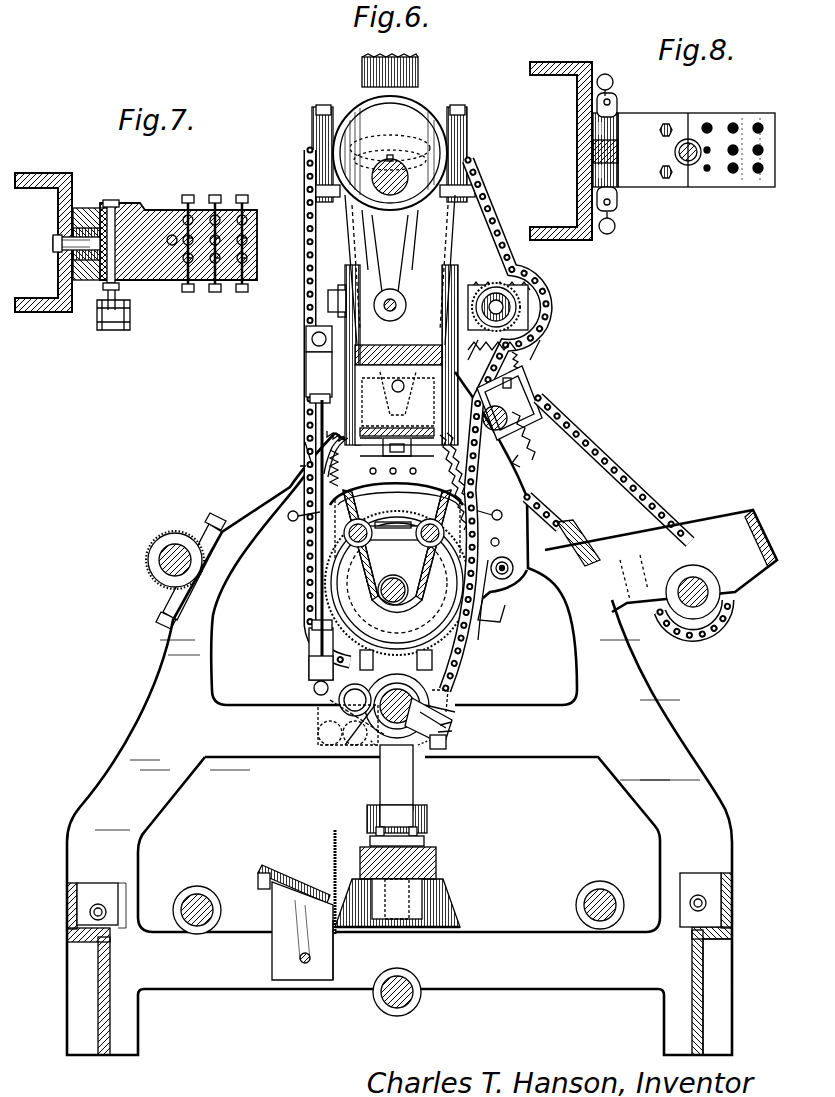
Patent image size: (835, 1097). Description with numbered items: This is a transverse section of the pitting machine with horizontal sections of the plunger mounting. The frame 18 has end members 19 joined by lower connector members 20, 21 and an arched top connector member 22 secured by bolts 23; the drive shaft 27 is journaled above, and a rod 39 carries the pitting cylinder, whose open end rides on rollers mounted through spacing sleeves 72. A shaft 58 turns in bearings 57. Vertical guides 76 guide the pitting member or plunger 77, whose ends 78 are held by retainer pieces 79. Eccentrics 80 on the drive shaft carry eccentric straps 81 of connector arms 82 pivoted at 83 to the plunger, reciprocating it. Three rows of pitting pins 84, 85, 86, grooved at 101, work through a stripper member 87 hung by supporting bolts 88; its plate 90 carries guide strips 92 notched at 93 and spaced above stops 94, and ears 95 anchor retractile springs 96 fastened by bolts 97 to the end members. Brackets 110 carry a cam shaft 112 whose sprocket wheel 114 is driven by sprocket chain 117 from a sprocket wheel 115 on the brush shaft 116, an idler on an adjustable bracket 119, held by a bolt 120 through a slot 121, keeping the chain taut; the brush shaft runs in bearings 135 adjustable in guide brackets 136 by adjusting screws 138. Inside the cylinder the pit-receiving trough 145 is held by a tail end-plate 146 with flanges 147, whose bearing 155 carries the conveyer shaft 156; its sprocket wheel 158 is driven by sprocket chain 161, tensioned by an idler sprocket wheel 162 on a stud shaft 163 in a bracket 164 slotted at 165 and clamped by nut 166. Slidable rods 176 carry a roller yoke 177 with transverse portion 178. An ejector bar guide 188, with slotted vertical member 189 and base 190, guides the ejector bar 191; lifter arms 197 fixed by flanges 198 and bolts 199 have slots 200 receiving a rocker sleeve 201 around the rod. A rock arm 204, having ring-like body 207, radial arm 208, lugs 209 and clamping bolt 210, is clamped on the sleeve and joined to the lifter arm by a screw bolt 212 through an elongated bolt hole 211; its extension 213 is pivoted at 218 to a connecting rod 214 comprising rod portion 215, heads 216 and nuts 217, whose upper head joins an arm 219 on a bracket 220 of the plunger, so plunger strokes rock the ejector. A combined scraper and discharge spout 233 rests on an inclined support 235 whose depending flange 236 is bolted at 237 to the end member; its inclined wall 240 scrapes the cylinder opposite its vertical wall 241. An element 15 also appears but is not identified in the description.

In FIG. 6, the lever 15 is at (308, 660).
In FIG. 6, the frame 18 is at (300, 480).
In FIG. 6, the end members 19 is at (170, 696).
In FIG. 7, the end members 19 is at (55, 313).
In FIG. 8, the end members 19 is at (580, 210).
In FIG. 6, the connector member 20 is at (692, 965).
In FIG. 6, the connector member 21 is at (97, 965).
In FIG. 6, the arched top connector member 22 is at (410, 76).
In FIG. 6, the bolts 23 is at (324, 106).
In FIG. 6, the drive shaft 27 is at (396, 160).
In FIG. 6, the shaft or cylindrical supporting rod 39 is at (388, 722).
In FIG. 6, the bearings 57 is at (179, 533).
In FIG. 6, the shaft 58 is at (160, 558).
In FIG. 6, the spacing sleeves 72 is at (222, 907).
In FIG. 6, the vertical guides 76 is at (402, 410).
In FIG. 7, the vertical guides 76 is at (58, 252).
In FIG. 8, the vertical guides 76 is at (592, 152).
In FIG. 6, the pitting member or plunger 77 is at (430, 357).
In FIG. 7, the pitting member or plunger 77 is at (160, 281).
In FIG. 7, the ends of pitting member 78 is at (128, 215).
In FIG. 7, the retainer pieces 79 is at (85, 212).
In FIG. 6, the eccentrics 80 is at (432, 135).
In FIG. 6, the eccentric straps 81 is at (452, 155).
In FIG. 6, the connector arms 82 is at (418, 232).
In FIG. 6, the pivotal connection 83 is at (410, 312).
In FIG. 7, the pitting pins 84 is at (246, 222).
In FIG. 8, the pitting pins 84 is at (707, 122).
In FIG. 7, the pitting pins 85 is at (248, 240).
In FIG. 8, the pitting pins 85 is at (737, 140).
In FIG. 7, the pitting pins 86 is at (248, 258).
In FIG. 8, the pitting pins 86 is at (708, 175).
In FIG. 8, the stripper member 87 is at (735, 175).
In FIG. 7, the supporting bolts 88 is at (172, 235).
In FIG. 8, the supporting bolts 88 is at (682, 165).
In FIG. 8, the flat plate 90 is at (765, 178).
In FIG. 6, the guide strips 92 is at (412, 432).
In FIG. 8, the guide strips 92 is at (650, 122).
In FIG. 8, the notches 93 is at (620, 158).
In FIG. 6, the stops 94 is at (396, 494).
In FIG. 6, the ears 95 is at (336, 448).
In FIG. 8, the ears 95 is at (612, 102).
In FIG. 6, the retractile springs 96 is at (397, 468).
In FIG. 8, the retractile springs 96 is at (605, 74).
In FIG. 6, the bolts 97 is at (288, 517).
In FIG. 8, the grooves 101 is at (733, 108).
In FIG. 6, the brackets 110 is at (613, 542).
In FIG. 6, the shaft 112 is at (712, 597).
In FIG. 6, the sprocket wheel 114 is at (702, 628).
In FIG. 6, the sprocket wheel 115 is at (540, 440).
In FIG. 6, the brush shaft 116 is at (528, 395).
In FIG. 6, the sprocket chain 117 is at (620, 472).
In FIG. 6, the adjustable bracket 119 is at (502, 585).
In FIG. 6, the bolt 120 is at (512, 566).
In FIG. 6, the slot 121 is at (484, 606).
In FIG. 6, the bearings 135 is at (545, 412).
In FIG. 6, the guide brackets 136 is at (524, 428).
In FIG. 6, the adjusting screws 138 is at (522, 368).
In FIG. 6, the pit-receiving box or trough 145 is at (397, 583).
In FIG. 6, the tail end-plate 146 is at (340, 580).
In FIG. 6, the inwardly-extending flanges 147 is at (345, 560).
In FIG. 6, the bearing 155 is at (405, 582).
In FIG. 6, the conveyer shaft 156 is at (348, 600).
In FIG. 6, the sprocket wheel 158 is at (450, 652).
In FIG. 6, the sprocket chain 161 is at (306, 320).
In FIG. 6, the idler sprocket wheel 162 is at (504, 304).
In FIG. 6, the stud shaft 163 is at (515, 292).
In FIG. 6, the bracket 164 is at (522, 312).
In FIG. 6, the slot 165 is at (520, 302).
In FIG. 6, the clamping nut 166 is at (498, 307).
In FIG. 6, the slidable rods 176 is at (345, 540).
In FIG. 6, the roller yoke 177 is at (387, 542).
In FIG. 6, the transverse portion 178 is at (417, 539).
In FIG. 6, the ejector bar guide 188 is at (430, 826).
In FIG. 6, the slotted vertical member 189 is at (440, 893).
In FIG. 6, the base 190 is at (462, 925).
In FIG. 6, the ejector bar 191 is at (438, 856).
In FIG. 6, the lifter arms 197 is at (420, 768).
In FIG. 6, the flange 198 is at (370, 840).
In FIG. 6, the bolts 199 is at (380, 830).
In FIG. 6, the upwardly-opening slot 200 is at (440, 690).
In FIG. 6, the rocker sleeve 201 is at (362, 735).
In FIG. 6, the rock arm 204 is at (345, 720).
In FIG. 6, the ring-like body portion 207 is at (433, 742).
In FIG. 6, the radial arm 208 is at (340, 715).
In FIG. 6, the lugs 209 is at (455, 724).
In FIG. 6, the clamping bolt 210 is at (458, 705).
In FIG. 6, the elongated bolt hole 211 is at (396, 660).
In FIG. 6, the screw bolt 212 is at (345, 705).
In FIG. 6, the outward extension 213 is at (348, 694).
In FIG. 6, the connecting rod 214 is at (310, 463).
In FIG. 6, the intermediate rod portion 215 is at (320, 597).
In FIG. 6, the heads 216 is at (306, 366).
In FIG. 6, the nuts 217 is at (310, 390).
In FIG. 6, the pivot 218 is at (314, 684).
In FIG. 6, the arm 219 is at (306, 338).
In FIG. 6, the bracket 220 is at (328, 300).
In FIG. 6, the combined scraper and discharge spout 233 is at (262, 872).
In FIG. 6, the inclined support 235 is at (285, 918).
In FIG. 6, the depending flange 236 is at (333, 954).
In FIG. 6, the bolt 237 is at (303, 964).
In FIG. 6, the inclined wall 240 is at (300, 890).
In FIG. 6, the vertical wall 241 is at (333, 843).